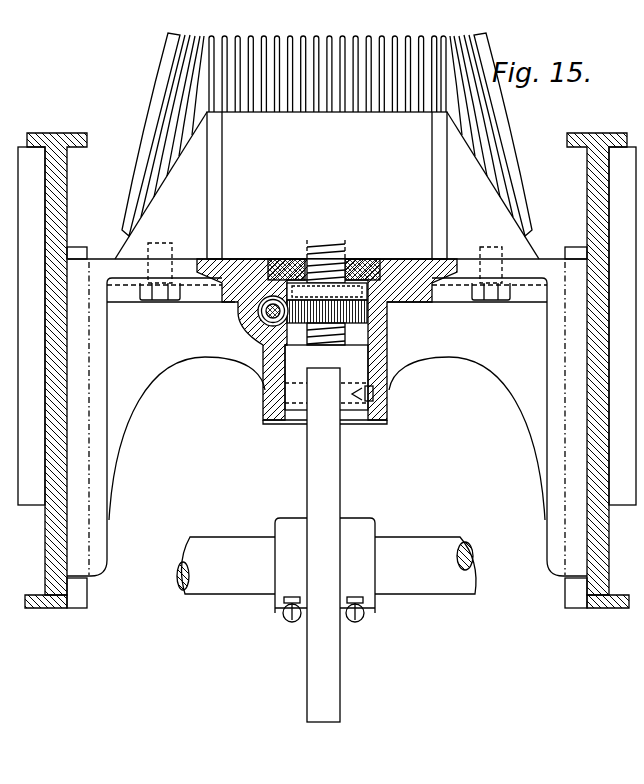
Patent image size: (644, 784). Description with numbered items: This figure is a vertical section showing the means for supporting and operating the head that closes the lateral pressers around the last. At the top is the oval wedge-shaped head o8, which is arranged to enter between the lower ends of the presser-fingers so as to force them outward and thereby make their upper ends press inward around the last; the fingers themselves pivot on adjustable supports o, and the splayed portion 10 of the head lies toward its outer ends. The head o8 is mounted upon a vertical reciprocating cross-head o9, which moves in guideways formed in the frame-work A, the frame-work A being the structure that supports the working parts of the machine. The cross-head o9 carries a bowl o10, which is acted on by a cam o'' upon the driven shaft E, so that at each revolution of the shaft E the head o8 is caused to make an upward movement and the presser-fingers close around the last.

The adjustable support o is at (284, 126).
The splayed teeth 10 is at (498, 141).
The oval wedge-shaped head o8 is at (327, 185).
The vertical reciprocating cross-head o9 is at (327, 409).
The bowl o10 is at (329, 393).
The cam o'' is at (323, 545).
The frame-work A is at (43, 532).
The driven shaft E is at (326, 570).